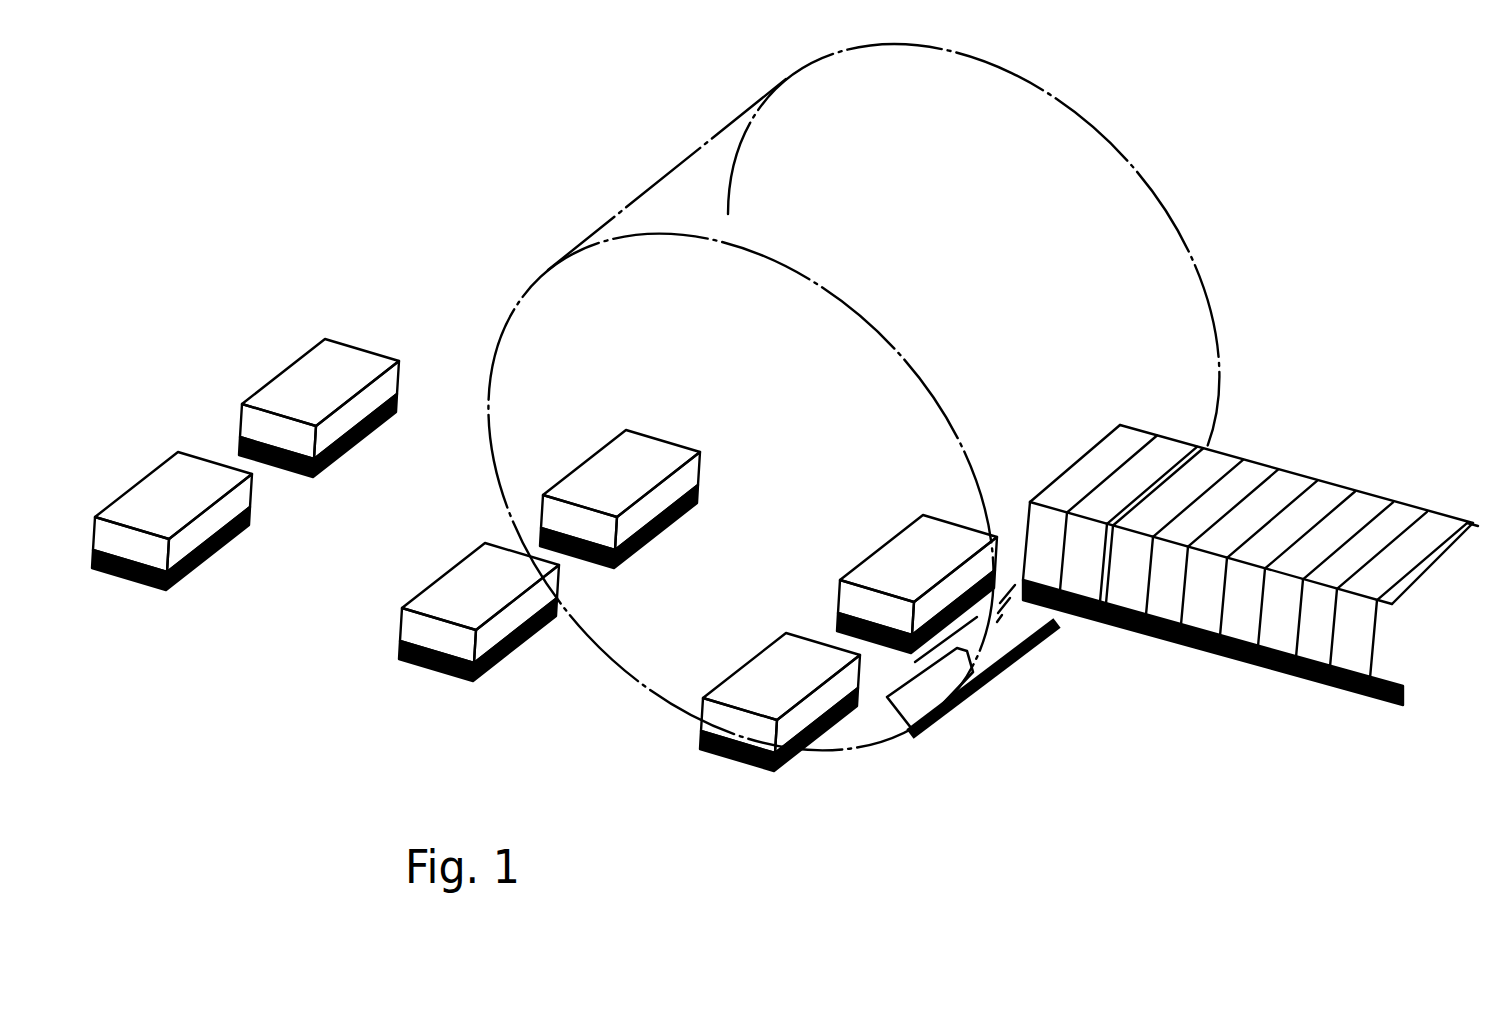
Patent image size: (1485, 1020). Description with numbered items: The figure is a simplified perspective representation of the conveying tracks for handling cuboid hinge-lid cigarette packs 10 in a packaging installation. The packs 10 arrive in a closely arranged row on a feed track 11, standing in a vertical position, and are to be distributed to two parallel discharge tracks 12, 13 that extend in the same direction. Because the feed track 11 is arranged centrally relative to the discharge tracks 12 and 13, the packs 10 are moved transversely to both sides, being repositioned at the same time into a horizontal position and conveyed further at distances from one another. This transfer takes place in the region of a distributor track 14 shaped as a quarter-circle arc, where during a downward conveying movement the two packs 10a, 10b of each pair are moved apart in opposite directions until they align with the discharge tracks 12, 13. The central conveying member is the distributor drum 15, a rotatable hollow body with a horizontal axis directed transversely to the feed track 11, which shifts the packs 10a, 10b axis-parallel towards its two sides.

The packs 10 is at (1283, 492).
The front pack 10a is at (213, 522).
The pack 10b is at (338, 423).
The feed track 11 is at (1313, 720).
The discharge track 12 is at (147, 443).
The discharge track 13 is at (295, 338).
The distributor track 14 is at (886, 762).
The distributor drum 15 is at (1165, 278).